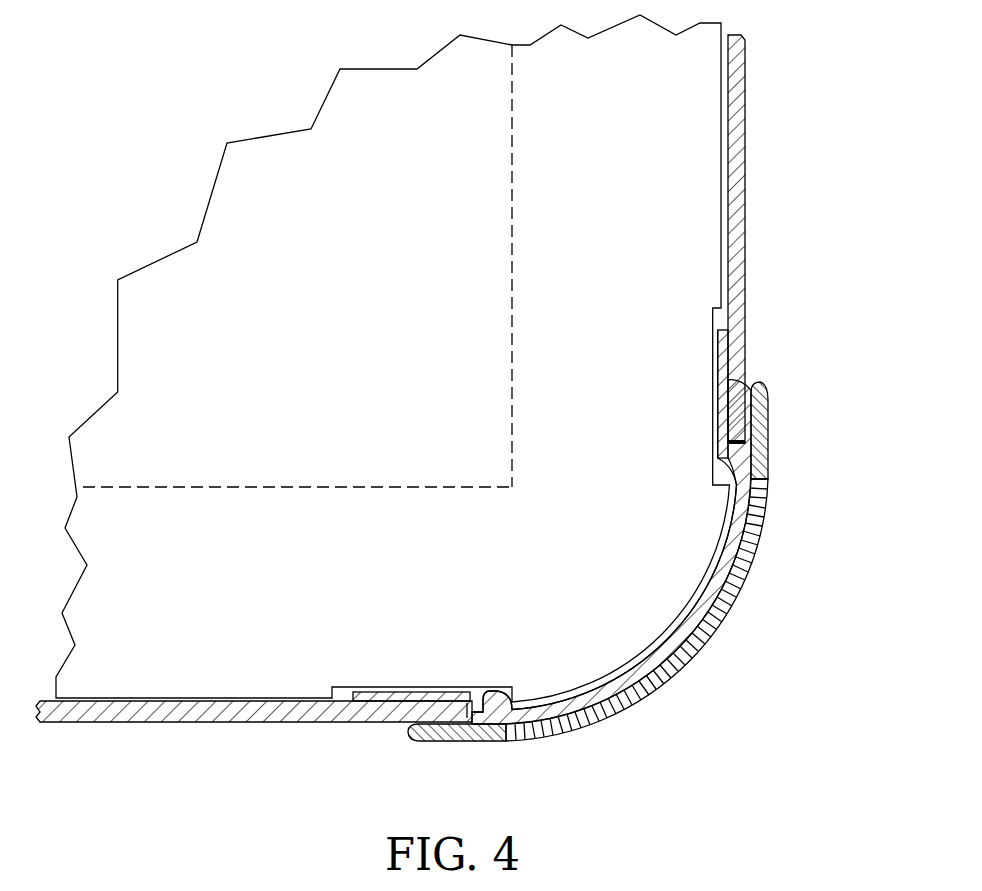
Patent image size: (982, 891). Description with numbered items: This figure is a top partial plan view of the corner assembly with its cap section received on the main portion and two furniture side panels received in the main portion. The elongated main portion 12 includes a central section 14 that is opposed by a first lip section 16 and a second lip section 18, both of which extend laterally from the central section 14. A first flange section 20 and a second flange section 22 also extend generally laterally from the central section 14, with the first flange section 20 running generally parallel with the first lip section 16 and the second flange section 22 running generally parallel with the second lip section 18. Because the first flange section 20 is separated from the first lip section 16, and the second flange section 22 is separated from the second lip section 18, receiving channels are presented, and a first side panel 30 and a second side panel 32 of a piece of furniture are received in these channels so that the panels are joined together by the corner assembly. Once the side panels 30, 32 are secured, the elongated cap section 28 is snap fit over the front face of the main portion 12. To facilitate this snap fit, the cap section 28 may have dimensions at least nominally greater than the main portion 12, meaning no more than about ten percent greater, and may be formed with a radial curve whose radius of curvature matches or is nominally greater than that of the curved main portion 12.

The elongated main portion 12 is at (583, 566).
The central section 14 is at (650, 666).
The first lip section 16 is at (453, 730).
The second lip section 18 is at (752, 433).
The first flange section 20 is at (412, 694).
The second flange section 22 is at (722, 385).
The elongated cap section 28 is at (623, 710).
The first side panel 30 is at (244, 720).
The second side panel 32 is at (740, 220).